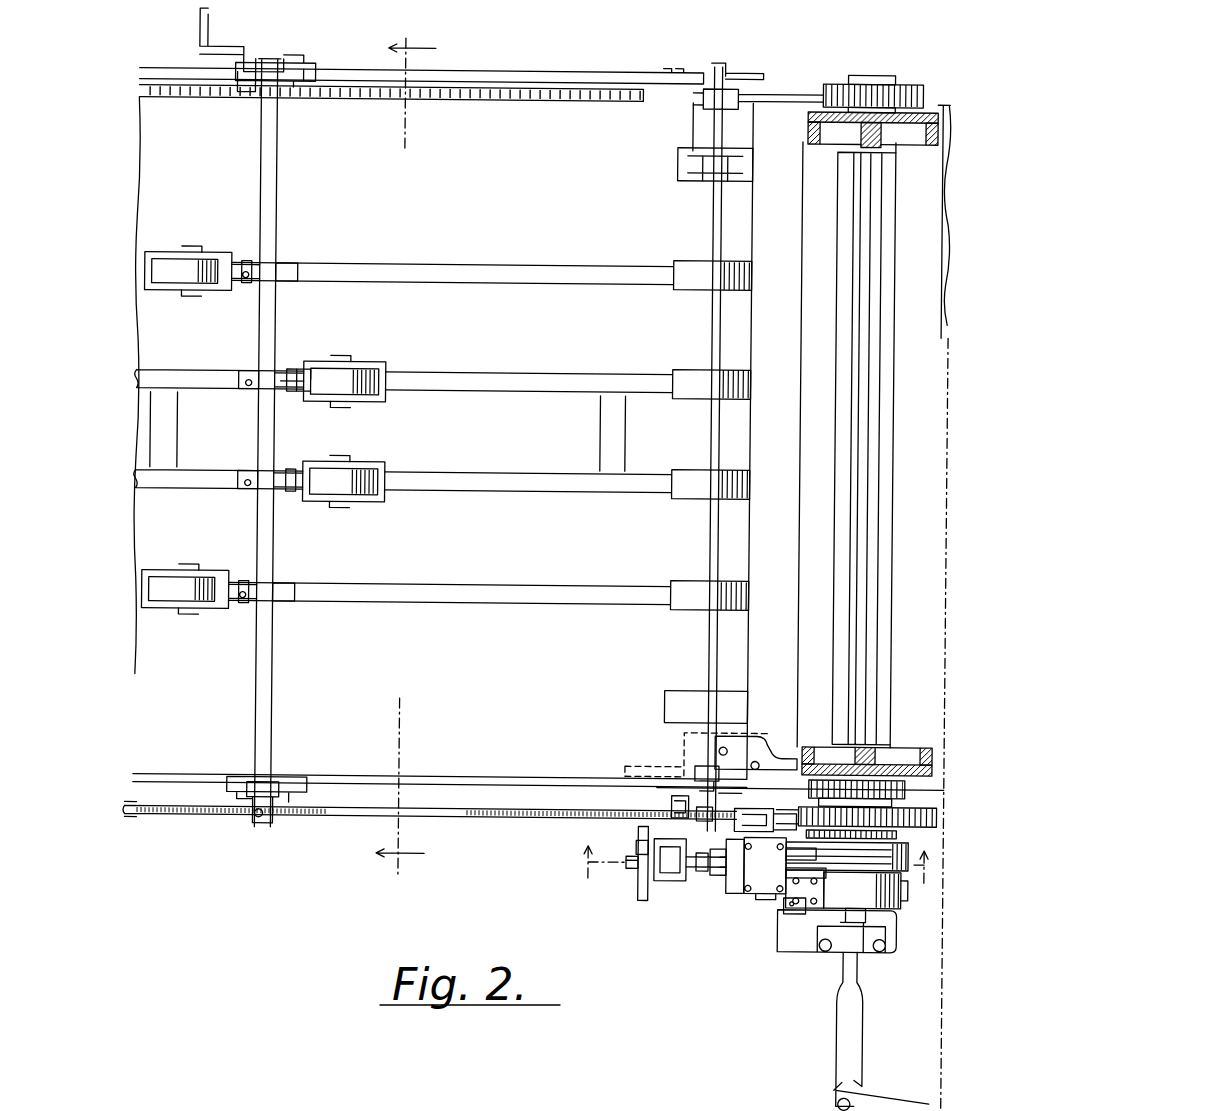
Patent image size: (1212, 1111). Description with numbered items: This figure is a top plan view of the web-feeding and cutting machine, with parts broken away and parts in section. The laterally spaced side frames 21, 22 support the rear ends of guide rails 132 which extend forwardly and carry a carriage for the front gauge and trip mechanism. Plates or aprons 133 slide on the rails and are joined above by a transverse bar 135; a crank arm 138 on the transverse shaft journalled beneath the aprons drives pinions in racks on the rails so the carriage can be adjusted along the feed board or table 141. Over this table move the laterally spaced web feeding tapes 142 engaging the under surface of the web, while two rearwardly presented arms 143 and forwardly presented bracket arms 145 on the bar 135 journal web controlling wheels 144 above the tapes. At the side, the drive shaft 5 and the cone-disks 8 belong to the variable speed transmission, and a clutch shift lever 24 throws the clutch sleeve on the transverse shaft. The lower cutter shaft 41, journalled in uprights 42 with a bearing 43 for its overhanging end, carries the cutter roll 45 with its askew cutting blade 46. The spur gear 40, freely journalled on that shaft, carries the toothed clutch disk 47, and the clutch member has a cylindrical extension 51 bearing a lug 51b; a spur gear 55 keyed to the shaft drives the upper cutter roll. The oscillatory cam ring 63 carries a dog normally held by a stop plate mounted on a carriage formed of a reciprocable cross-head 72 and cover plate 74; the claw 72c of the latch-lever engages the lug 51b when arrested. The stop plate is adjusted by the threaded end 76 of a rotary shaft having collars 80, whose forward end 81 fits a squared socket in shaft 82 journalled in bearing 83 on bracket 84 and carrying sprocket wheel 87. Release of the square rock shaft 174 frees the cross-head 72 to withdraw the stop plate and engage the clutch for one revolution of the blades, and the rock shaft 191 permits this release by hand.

The shaft 5 is at (406, 455).
The cone-disks 8 is at (753, 878).
The side frame 21 is at (936, 734).
The side frame 22 is at (924, 100).
The clutch shift lever 24 is at (916, 1100).
The spur gear 40 is at (890, 806).
The lower cutter shaft 41 is at (870, 72).
The uprights 42 is at (908, 138).
The bearing 43 is at (870, 952).
The cutter roll 45 is at (845, 634).
The cutting blade 46 is at (885, 560).
The clutch disk 47 is at (872, 841).
The cylindrical wall or extension 51 is at (900, 906).
The plate or lug 51b is at (804, 880).
The spur gear 55 is at (720, 792).
The oscillatory cam ring 63 is at (790, 848).
The reciprocable cross-head 72 is at (746, 905).
The claw 72c is at (803, 912).
The cover plate 74 is at (770, 900).
The threaded end 76 is at (736, 882).
The collars 80 is at (714, 876).
The forward end 81 is at (638, 856).
The shaft 82 is at (634, 873).
The bearing 83 is at (670, 882).
The bracket 84 is at (696, 875).
The sprocket wheel 87 is at (642, 832).
The guide rails 132 is at (564, 76).
The plates or aprons 133 is at (304, 64).
The transverse bar 135 is at (274, 670).
The crank arm 138 is at (216, 42).
The feed board or table 141 is at (442, 443).
The web feeding tapes 142 is at (410, 286).
The rearwardly presented arms 143 is at (296, 402).
The web controlling wheels 144 is at (165, 255).
The bracket arms 145 is at (242, 290).
The square rock shaft 174 is at (338, 822).
The rock shaft 191 is at (708, 654).